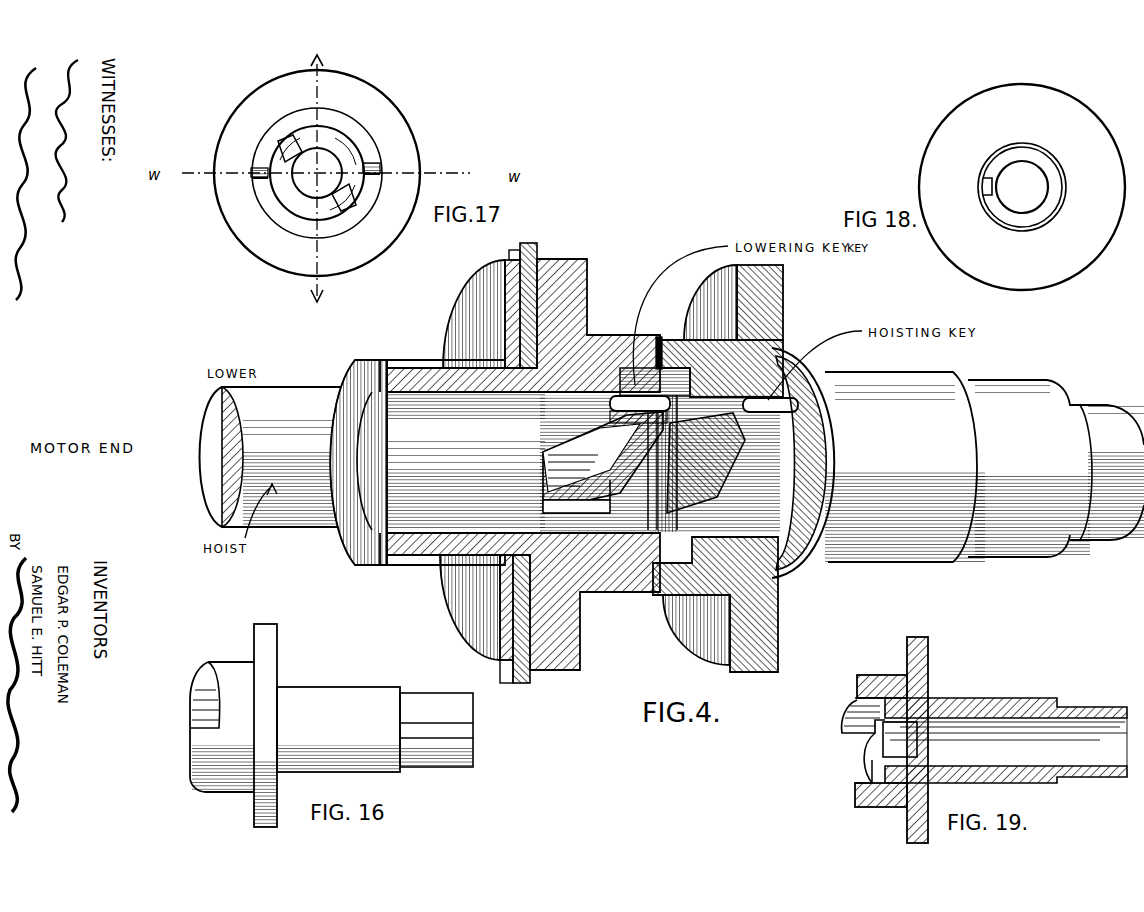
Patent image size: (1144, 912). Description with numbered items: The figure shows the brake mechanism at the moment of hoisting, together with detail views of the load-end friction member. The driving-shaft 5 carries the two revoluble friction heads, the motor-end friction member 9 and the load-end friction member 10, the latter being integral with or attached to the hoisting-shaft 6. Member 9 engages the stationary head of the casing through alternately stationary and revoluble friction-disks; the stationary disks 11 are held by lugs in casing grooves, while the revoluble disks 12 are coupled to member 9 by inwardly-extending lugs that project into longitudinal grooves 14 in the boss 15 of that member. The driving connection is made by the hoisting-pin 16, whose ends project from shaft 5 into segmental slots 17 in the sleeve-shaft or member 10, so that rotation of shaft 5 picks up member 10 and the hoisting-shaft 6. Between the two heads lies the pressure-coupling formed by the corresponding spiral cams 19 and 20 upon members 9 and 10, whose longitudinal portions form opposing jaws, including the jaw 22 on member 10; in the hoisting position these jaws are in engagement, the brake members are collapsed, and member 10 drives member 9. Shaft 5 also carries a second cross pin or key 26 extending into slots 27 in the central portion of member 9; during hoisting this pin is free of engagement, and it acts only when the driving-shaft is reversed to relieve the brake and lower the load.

In FIG. 4, the driving-shaft 5 is at (298, 393).
In FIG. 4, the hoisting-shaft 6 is at (872, 378).
In FIG. 16, the hoisting-shaft 6 is at (345, 695).
In FIG. 19, the hoisting-shaft 6 is at (1033, 710).
In FIG. 4, the friction member 9 is at (566, 266).
In FIG. 17, the friction member 10 is at (364, 92).
In FIG. 18, the friction member 10 is at (950, 137).
In FIG. 4, the friction member 10 is at (784, 290).
In FIG. 16, the friction member 10 is at (268, 656).
In FIG. 19, the friction member 10 is at (930, 660).
In FIG. 4, the stationary friction-disks 11 is at (520, 282).
In FIG. 4, the revoluble friction-disks 12 is at (482, 290).
In FIG. 4, the longitudinal grooves 14 is at (383, 362).
In FIG. 4, the boss 15 is at (350, 540).
In FIG. 4, the hoisting-pin 16 is at (828, 392).
In FIG. 17, the segmental slots 17 is at (278, 153).
In FIG. 4, the segmental slots 17 is at (703, 463).
In FIG. 19, the segmental slots 17 is at (900, 739).
In FIG. 4, the spiral cam 19 is at (657, 360).
In FIG. 17, the spiral cam 20 is at (268, 184).
In FIG. 4, the spiral cam 20 is at (660, 366).
In FIG. 16, the spiral cam 20 is at (203, 681).
In FIG. 19, the spiral cam 20 is at (846, 693).
In FIG. 17, the jaw 22 is at (256, 172).
In FIG. 16, the jaw 22 is at (192, 727).
In FIG. 19, the jaw 22 is at (862, 760).
In FIG. 4, the cross pin or key 26 is at (532, 462).
In FIG. 4, the slots 27 is at (540, 498).